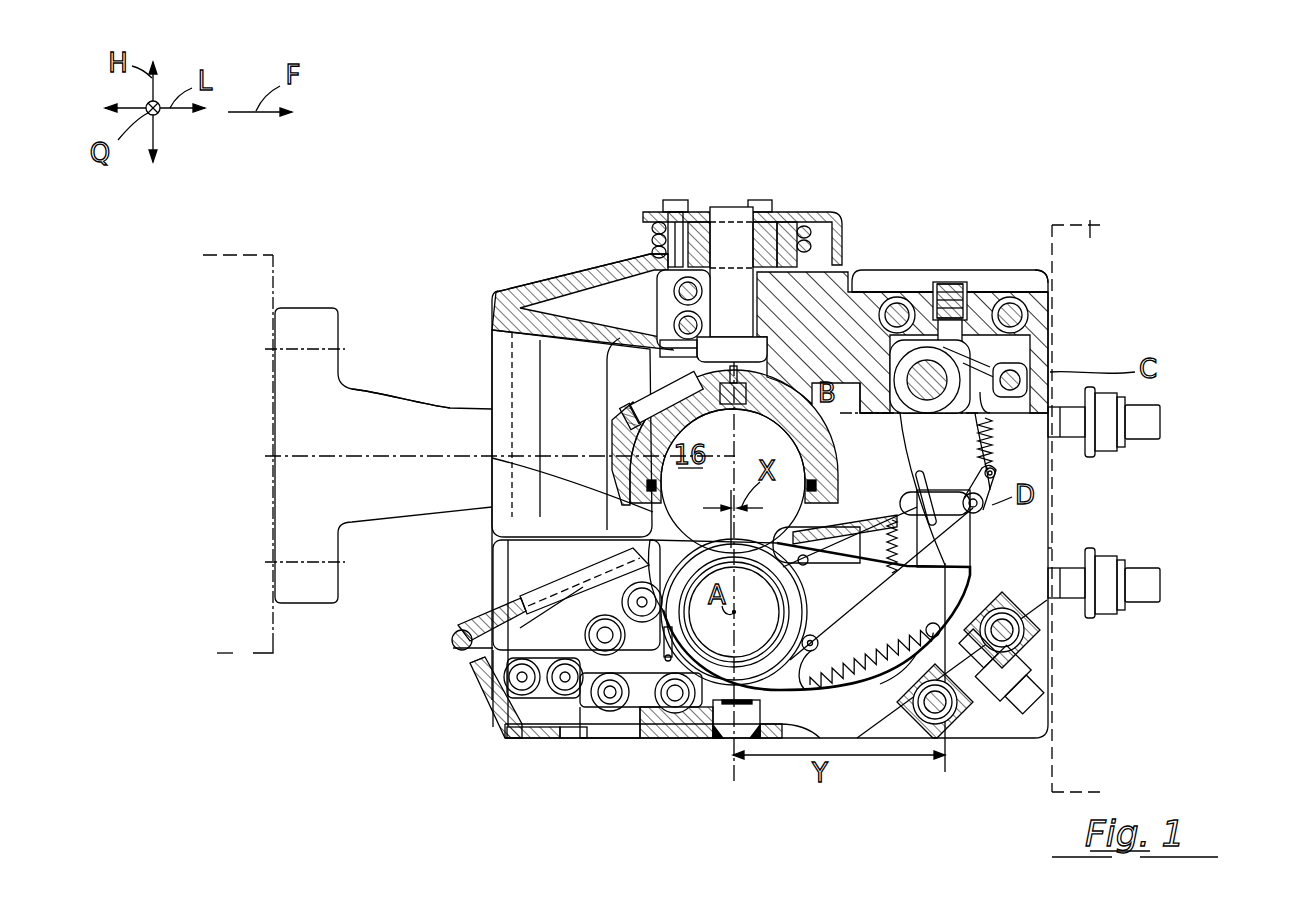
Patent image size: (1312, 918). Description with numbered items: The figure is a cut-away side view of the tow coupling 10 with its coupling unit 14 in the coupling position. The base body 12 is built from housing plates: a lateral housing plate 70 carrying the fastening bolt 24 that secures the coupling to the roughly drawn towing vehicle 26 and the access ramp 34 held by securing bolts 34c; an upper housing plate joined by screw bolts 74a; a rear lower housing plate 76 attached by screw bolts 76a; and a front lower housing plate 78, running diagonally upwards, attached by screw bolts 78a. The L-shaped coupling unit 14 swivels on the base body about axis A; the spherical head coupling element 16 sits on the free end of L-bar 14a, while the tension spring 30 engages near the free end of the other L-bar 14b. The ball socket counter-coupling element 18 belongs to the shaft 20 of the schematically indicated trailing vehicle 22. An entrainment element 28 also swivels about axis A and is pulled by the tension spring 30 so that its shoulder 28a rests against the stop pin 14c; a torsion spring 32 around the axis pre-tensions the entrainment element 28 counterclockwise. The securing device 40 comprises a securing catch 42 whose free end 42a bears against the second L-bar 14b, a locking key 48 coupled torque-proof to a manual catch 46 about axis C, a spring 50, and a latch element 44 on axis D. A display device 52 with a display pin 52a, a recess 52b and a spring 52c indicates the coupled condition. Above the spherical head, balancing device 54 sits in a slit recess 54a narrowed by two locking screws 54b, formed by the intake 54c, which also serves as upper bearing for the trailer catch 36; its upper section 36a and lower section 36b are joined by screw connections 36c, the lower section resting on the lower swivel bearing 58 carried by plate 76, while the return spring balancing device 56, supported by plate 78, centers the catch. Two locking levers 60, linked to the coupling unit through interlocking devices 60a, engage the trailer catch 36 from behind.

The tow coupling 10 is at (1234, 154).
The base body 12 is at (825, 318).
The coupling unit 14 is at (893, 673).
The L-bar 14a is at (493, 456).
The other L-bar 14b is at (908, 687).
The stop pin 14c is at (760, 740).
The coupling element 16 is at (733, 481).
The counter-coupling element 18 is at (663, 390).
The shaft 20 is at (303, 322).
The trailing vehicle 22 is at (230, 645).
The fastening bolt 24 is at (1142, 584).
The towing vehicle 26 is at (1098, 222).
The entrainment element 28 is at (880, 580).
The shoulder 28a is at (782, 692).
The tension spring 30 is at (872, 680).
The torsion spring 32 is at (607, 660).
The access ramp 34 is at (520, 600).
The securing bolts 34c is at (462, 640).
The trailer catch 36 is at (572, 272).
The upper section 36a is at (505, 300).
The lower section 36b is at (498, 716).
The screw connections 36c is at (487, 688).
The securing device 40 is at (1068, 487).
The securing catch 42 is at (935, 448).
The free end 42a is at (1048, 552).
The latch element 44 is at (1005, 525).
The manual catch 46 is at (1050, 332).
The locking key 48 is at (1050, 355).
The spring 50 is at (998, 436).
The display device 52 is at (962, 275).
The display pin 52a is at (945, 280).
The recess 52b is at (965, 280).
The spring 52c is at (938, 282).
The balancing device 54 is at (733, 158).
The recess 54a is at (759, 213).
The locking screws 54b is at (648, 255).
The intake 54c is at (706, 212).
The balancing device 56 is at (806, 225).
The lower swivel bearing 58 is at (725, 725).
The locking levers 60 is at (826, 584).
The interlocking devices 60a is at (680, 735).
The lateral housing plate 70 is at (1040, 672).
The screw bolts 74a is at (1050, 295).
The rear lower housing plate 76 is at (640, 715).
The screw bolts 76a is at (603, 700).
The front lower housing plate 78 is at (1037, 603).
The screw bolts 78a is at (948, 724).